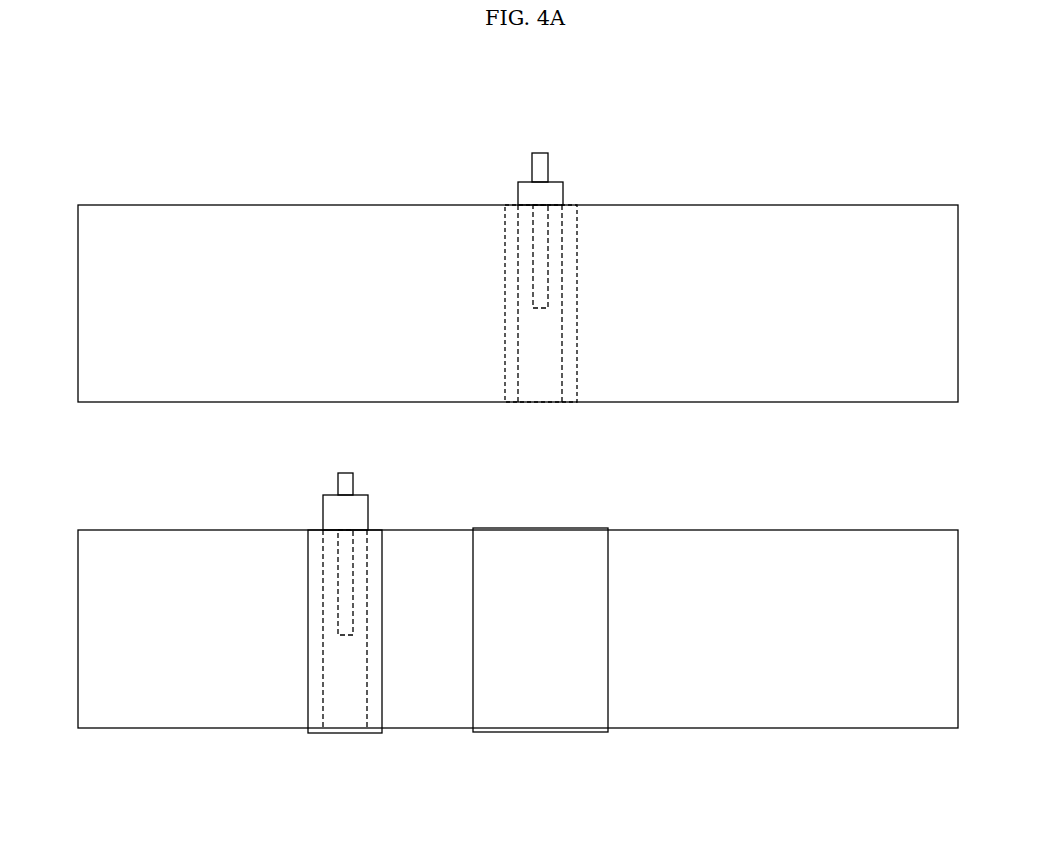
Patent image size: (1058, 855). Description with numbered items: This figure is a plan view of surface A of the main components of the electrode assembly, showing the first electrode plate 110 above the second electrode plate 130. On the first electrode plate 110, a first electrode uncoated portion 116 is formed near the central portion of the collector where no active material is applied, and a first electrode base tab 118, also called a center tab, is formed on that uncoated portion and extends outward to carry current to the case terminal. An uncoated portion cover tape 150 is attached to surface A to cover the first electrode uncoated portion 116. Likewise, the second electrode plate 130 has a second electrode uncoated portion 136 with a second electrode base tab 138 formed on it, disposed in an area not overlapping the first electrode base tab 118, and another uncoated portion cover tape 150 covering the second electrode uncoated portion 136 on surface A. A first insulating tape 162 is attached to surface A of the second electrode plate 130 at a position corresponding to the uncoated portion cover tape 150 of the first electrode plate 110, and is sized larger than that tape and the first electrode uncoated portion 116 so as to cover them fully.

The first electrode plate 110 is at (100, 188).
The first electrode base tab 118 is at (538, 157).
The uncoated portion cover tape 150 is at (567, 308).
The first electrode uncoated portion 116 is at (543, 373).
The second electrode plate 130 is at (95, 751).
The second electrode base tab 138 is at (355, 482).
The first insulating tape 162 is at (540, 543).
The second electrode uncoated portion 136 is at (352, 683).